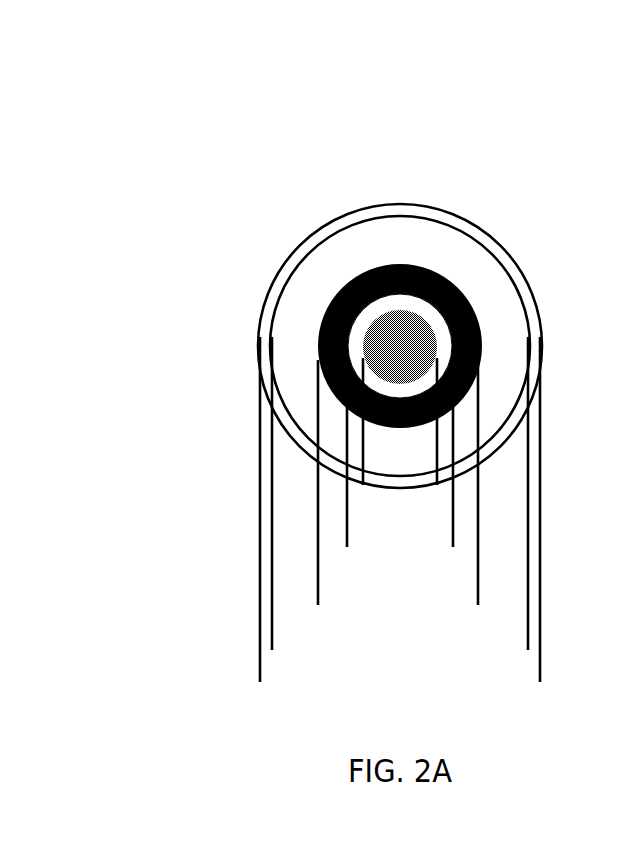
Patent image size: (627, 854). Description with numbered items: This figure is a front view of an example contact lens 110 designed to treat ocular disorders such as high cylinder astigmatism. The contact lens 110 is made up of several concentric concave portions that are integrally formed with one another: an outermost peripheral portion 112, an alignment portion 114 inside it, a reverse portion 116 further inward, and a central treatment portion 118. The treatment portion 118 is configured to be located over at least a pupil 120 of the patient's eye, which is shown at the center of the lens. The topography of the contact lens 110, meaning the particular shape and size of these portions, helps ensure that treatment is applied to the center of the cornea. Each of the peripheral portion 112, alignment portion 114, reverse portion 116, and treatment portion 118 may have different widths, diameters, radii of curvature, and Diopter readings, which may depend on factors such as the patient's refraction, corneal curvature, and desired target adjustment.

The contact lens 110 is at (197, 103).
The peripheral portion 112 is at (397, 206).
The alignment portion 114 is at (445, 248).
The reverse portion 116 is at (457, 337).
The treatment portion 118 is at (358, 337).
The pupil 120 is at (420, 352).